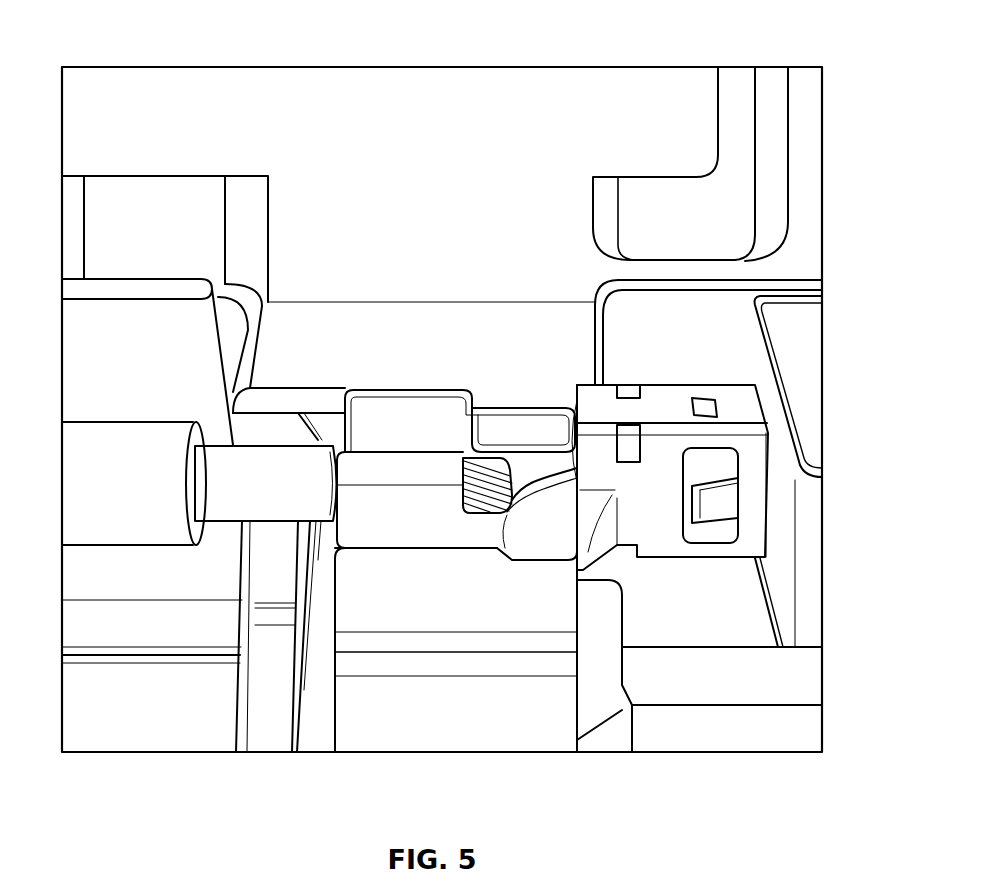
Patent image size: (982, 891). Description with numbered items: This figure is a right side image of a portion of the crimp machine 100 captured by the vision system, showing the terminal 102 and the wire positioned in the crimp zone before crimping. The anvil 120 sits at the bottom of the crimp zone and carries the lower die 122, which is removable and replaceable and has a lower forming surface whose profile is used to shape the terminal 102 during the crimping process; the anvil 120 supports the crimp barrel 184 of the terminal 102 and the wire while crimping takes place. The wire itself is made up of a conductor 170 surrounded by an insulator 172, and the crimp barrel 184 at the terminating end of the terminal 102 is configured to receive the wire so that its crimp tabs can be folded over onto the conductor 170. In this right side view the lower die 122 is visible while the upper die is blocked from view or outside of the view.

The crimp machine 100 is at (672, 48).
The terminal 102 is at (738, 455).
The anvil 120 is at (413, 699).
The lower die 122 is at (495, 665).
The conductor 170 is at (497, 480).
The insulator 172 is at (271, 503).
The crimp barrel 184 is at (403, 507).